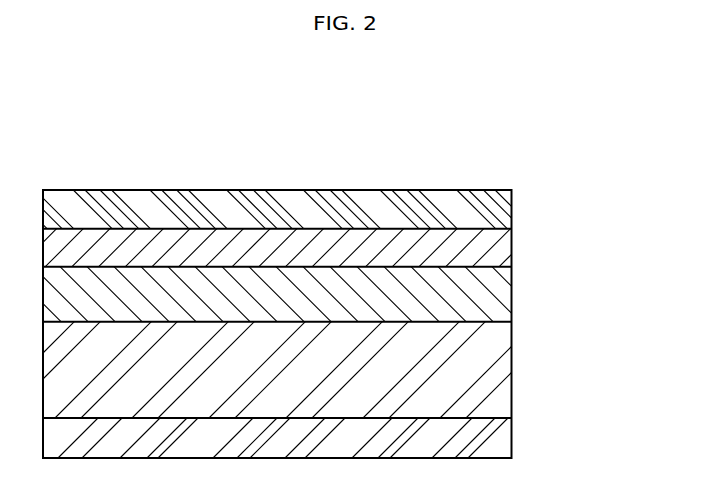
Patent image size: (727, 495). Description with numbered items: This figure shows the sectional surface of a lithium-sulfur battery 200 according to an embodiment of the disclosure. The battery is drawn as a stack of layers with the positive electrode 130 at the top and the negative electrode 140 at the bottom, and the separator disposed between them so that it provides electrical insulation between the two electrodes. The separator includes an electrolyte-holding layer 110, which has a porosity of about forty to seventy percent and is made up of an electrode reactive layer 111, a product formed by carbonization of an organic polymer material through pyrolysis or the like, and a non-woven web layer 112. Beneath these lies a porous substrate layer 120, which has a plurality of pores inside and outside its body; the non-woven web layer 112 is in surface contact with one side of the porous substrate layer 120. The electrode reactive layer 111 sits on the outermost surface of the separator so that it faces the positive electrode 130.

The lithium-sulfur battery 200 is at (441, 133).
The positive electrode 130 is at (504, 209).
The electrolyte-holding layer 110 is at (344, 275).
The electrode reactive layer 111 is at (504, 249).
The non-woven web layer 112 is at (504, 298).
The porous substrate layer 120 is at (504, 372).
The negative electrode 140 is at (504, 439).